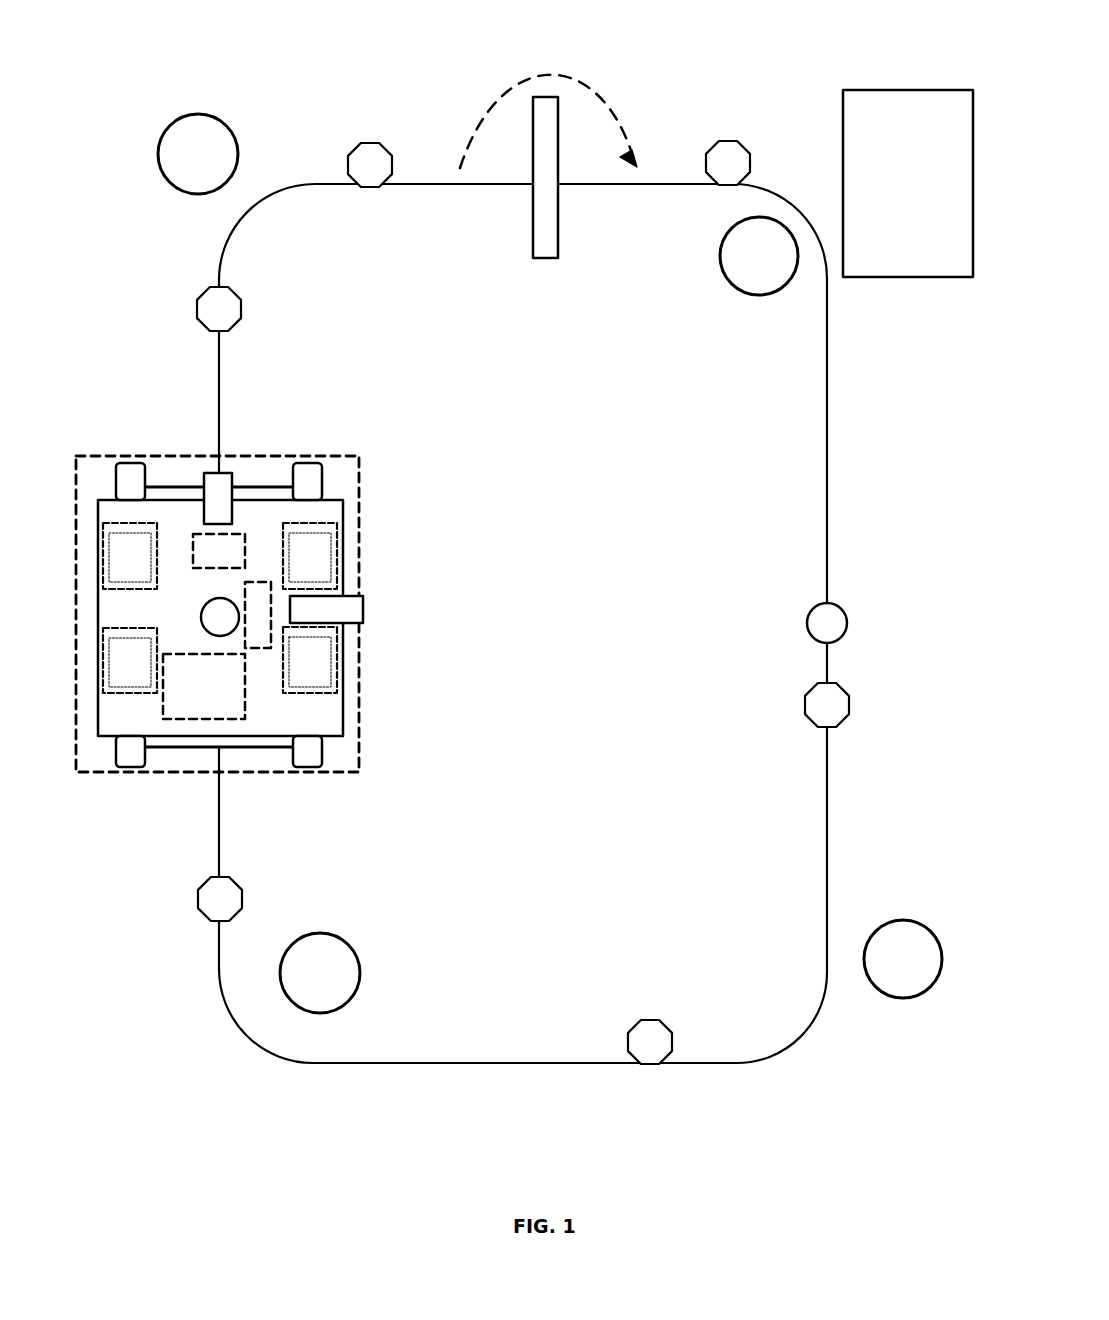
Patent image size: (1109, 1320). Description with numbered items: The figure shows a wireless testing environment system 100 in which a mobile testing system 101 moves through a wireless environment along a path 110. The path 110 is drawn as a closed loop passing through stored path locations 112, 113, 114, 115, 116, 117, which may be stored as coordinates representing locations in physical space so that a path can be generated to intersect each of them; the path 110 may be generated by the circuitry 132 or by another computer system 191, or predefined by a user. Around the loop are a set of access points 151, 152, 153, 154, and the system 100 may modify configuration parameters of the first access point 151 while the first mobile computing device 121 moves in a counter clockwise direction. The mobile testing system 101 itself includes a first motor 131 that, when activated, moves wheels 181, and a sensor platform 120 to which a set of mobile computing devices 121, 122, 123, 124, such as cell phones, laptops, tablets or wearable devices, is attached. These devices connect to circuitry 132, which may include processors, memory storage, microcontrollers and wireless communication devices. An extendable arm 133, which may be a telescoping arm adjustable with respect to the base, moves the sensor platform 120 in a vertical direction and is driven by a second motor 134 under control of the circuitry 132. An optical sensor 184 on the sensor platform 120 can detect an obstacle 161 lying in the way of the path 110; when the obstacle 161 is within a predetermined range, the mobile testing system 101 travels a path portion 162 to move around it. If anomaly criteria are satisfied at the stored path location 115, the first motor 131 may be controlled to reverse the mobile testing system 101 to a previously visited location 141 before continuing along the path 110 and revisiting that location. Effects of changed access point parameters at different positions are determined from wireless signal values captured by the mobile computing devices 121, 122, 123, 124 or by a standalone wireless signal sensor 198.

The wireless testing environment system 100 is at (553, 26).
The mobile testing system 101 is at (360, 498).
The path 110 is at (287, 170).
The stored path location 112 is at (197, 308).
The stored path location 113 is at (371, 143).
The stored path location 114 is at (729, 141).
The stored path location 115 is at (849, 705).
The stored path location 116 is at (652, 1064).
The stored path location 117 is at (214, 921).
The sensor platform 120 is at (278, 497).
The mobile computing device 121 is at (130, 693).
The mobile computing device 122 is at (116, 487).
The mobile computing device 123 is at (337, 556).
The mobile computing device 124 is at (337, 676).
The first motor 131 is at (196, 534).
The circuitry 132 is at (171, 720).
The extendable arm 133 is at (220, 637).
The second motor 134 is at (256, 648).
The previously visited location 141 is at (808, 625).
The first access point 151 is at (320, 973).
The access point 152 is at (198, 154).
The access point 153 is at (759, 256).
The access point 154 is at (903, 959).
The obstacle 161 is at (545, 258).
The path portion 162 is at (600, 118).
The wheels 181 is at (130, 462).
The optical sensor 184 is at (217, 473).
The computer system 191 is at (896, 90).
The standalone wireless signal sensor 198 is at (363, 612).